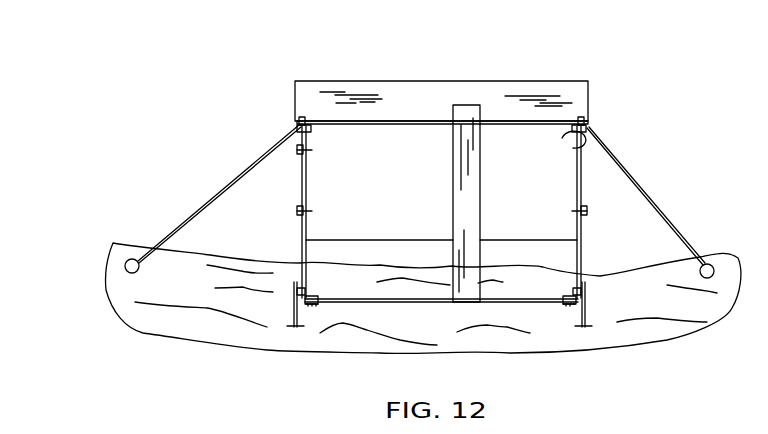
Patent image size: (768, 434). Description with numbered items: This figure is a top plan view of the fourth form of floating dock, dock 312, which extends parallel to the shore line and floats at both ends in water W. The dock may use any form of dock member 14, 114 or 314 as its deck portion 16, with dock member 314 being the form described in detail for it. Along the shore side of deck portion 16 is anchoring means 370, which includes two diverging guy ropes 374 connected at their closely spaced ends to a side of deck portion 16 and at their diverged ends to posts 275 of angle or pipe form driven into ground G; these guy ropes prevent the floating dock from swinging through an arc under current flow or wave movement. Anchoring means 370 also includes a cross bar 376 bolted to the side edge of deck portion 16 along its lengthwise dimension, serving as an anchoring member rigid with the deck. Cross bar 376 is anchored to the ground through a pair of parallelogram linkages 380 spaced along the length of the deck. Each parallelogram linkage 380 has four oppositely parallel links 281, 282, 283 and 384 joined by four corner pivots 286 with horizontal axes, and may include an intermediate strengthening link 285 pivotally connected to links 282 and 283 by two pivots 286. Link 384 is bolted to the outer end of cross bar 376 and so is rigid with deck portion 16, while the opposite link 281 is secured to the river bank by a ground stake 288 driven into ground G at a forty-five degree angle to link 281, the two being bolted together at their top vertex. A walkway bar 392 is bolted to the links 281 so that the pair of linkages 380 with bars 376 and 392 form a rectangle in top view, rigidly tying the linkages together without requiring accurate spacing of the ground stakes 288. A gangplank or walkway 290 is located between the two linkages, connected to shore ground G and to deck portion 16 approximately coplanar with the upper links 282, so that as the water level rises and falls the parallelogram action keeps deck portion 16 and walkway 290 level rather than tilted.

The dock member 14 is at (441, 79).
The dock member 114 is at (441, 79).
The dock member 314 is at (441, 79).
The deck portion 16 is at (333, 81).
The dock 312 is at (602, 101).
The cross bar 376 is at (500, 124).
The walkway 290 is at (458, 214).
The anchoring means 370 is at (298, 229).
The parallelogram linkage 380 is at (575, 181).
The walkway bar 392 is at (413, 303).
The link 384 is at (312, 134).
The pivot 286 is at (306, 138).
The intermediate strengthening link 285 is at (584, 212).
The link 282 is at (441, 240).
The link 283 is at (307, 241).
The link 281 is at (306, 292).
The ground stake 288 is at (588, 306).
The guy rope 374 is at (242, 172).
The post 275 is at (140, 268).
The water W is at (174, 208).
The ground G is at (644, 340).